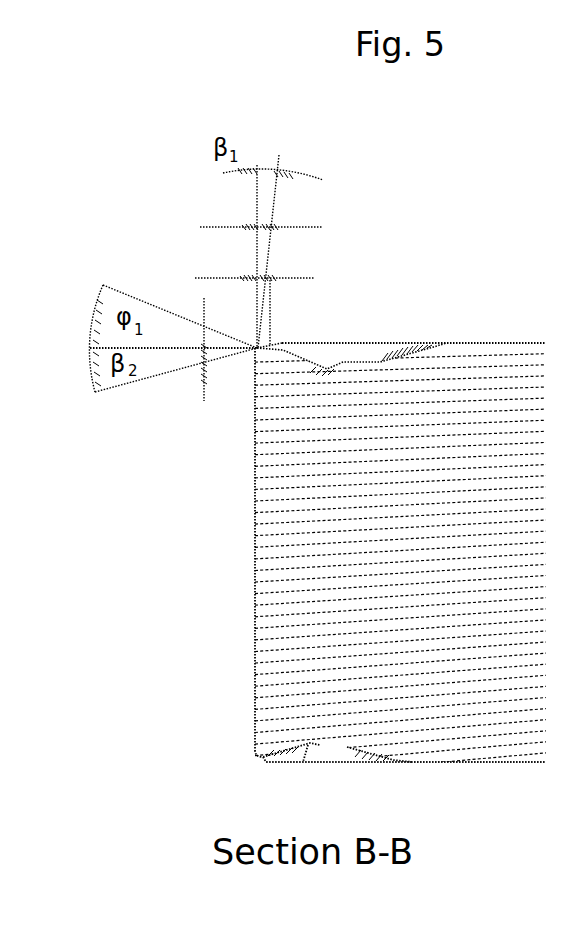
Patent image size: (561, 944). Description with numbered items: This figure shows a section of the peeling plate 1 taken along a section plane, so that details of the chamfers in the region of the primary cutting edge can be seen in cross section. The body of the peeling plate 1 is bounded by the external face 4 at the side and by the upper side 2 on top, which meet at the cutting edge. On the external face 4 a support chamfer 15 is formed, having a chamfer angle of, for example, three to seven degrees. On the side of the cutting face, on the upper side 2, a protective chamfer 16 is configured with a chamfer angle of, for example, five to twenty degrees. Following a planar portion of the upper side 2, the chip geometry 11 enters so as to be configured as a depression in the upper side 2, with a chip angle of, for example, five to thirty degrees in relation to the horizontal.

The peeling plate 1 is at (148, 530).
The upper side 2 is at (503, 340).
The external face 4 is at (250, 481).
The chip geometry 11 is at (360, 351).
The support chamfer 15 is at (257, 361).
The protective chamfer 16 is at (258, 348).